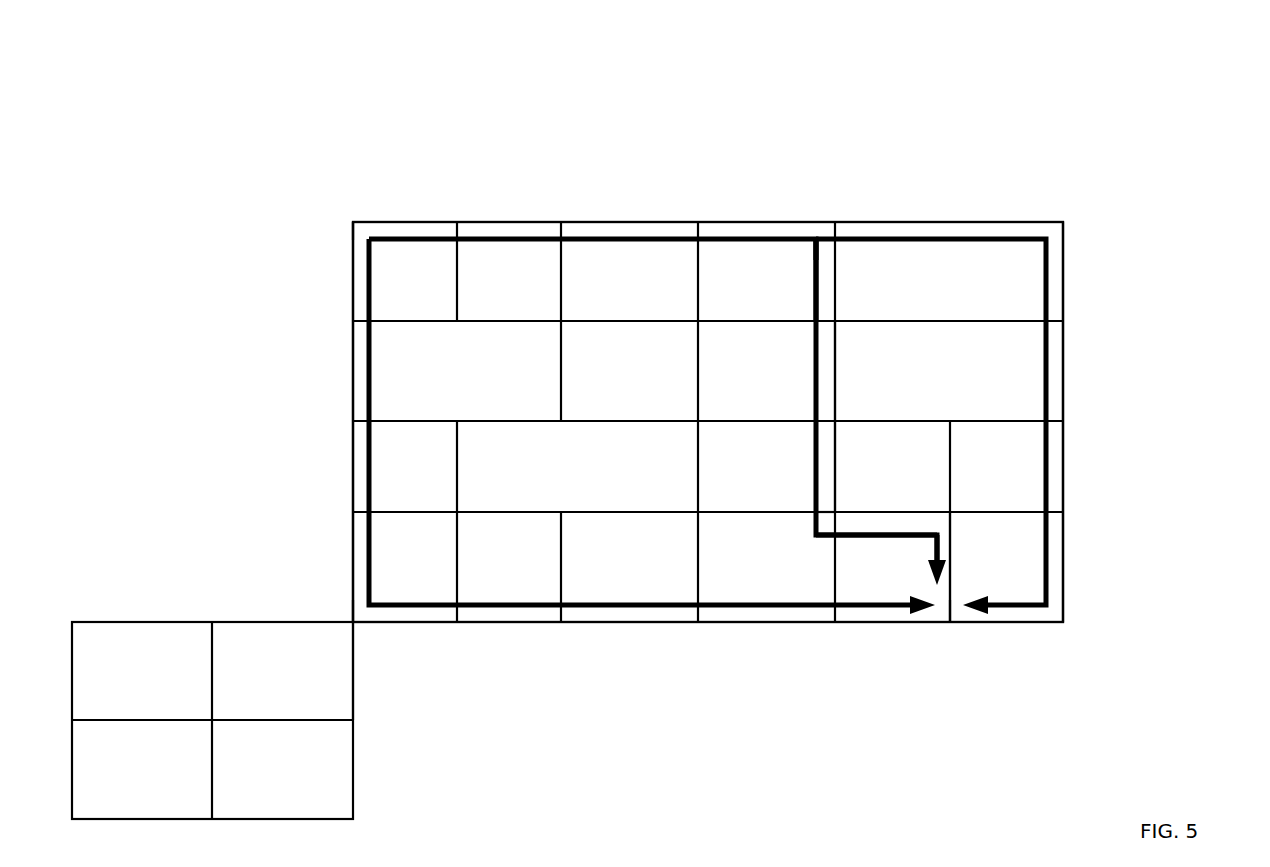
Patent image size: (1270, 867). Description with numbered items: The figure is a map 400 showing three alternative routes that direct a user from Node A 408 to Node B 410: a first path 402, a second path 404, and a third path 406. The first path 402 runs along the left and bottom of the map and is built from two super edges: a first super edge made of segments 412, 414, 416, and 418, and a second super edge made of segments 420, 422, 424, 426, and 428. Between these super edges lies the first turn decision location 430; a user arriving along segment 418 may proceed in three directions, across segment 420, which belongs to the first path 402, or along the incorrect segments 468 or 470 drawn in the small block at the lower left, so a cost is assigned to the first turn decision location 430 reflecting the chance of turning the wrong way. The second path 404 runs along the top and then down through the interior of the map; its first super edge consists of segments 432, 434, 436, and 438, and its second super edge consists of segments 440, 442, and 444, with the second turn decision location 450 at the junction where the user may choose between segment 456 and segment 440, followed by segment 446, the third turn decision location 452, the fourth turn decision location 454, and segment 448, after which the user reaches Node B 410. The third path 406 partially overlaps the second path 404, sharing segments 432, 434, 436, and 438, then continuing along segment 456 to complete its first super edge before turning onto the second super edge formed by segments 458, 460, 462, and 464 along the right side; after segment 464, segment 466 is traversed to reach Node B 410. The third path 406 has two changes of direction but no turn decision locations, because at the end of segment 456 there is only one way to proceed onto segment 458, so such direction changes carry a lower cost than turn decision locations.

The map 400 is at (1180, 80).
The first path 402 is at (369, 330).
The second path 404 is at (816, 320).
The third path 406 is at (1003, 237).
The Node A 408 is at (355, 225).
The Node B 410 is at (950, 622).
The segment 412 is at (353, 262).
The segment 414 is at (353, 385).
The segment 416 is at (353, 470).
The segment 418 is at (353, 558).
The segment 420 is at (388, 622).
The segment 422 is at (492, 622).
The segment 424 is at (608, 622).
The segment 426 is at (752, 622).
The segment 428 is at (870, 622).
The first turn decision location 430 is at (353, 622).
The segment 432 is at (384, 222).
The segment 434 is at (490, 222).
The segment 436 is at (617, 222).
The segment 438 is at (765, 222).
The segment 440 is at (816, 284).
The segment 442 is at (835, 382).
The segment 444 is at (835, 459).
The segment 446 is at (883, 533).
The segment 448 is at (950, 561).
The second turn decision location 450 is at (816, 238).
The third turn decision location 452 is at (833, 513).
The fourth turn decision location 454 is at (937, 532).
The segment 456 is at (920, 222).
The segment 458 is at (1064, 273).
The segment 460 is at (1064, 373).
The segment 462 is at (1064, 466).
The segment 464 is at (1064, 568).
The segment 466 is at (1027, 622).
The segment 468 is at (290, 623).
The segment 470 is at (353, 689).